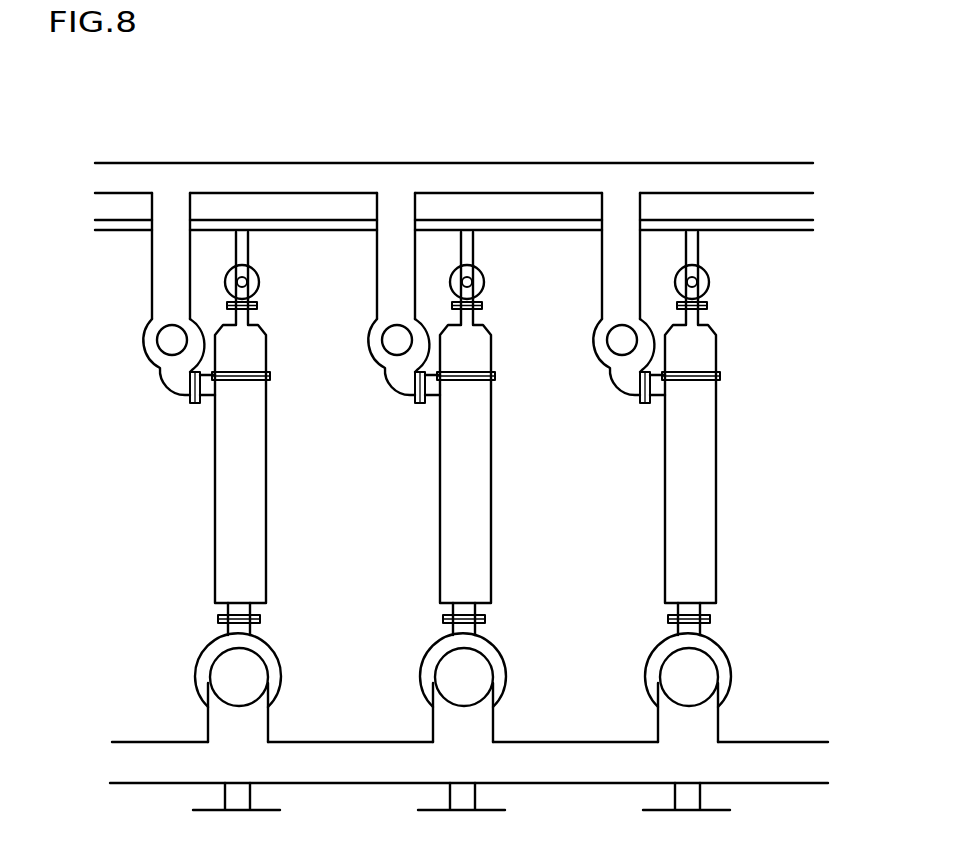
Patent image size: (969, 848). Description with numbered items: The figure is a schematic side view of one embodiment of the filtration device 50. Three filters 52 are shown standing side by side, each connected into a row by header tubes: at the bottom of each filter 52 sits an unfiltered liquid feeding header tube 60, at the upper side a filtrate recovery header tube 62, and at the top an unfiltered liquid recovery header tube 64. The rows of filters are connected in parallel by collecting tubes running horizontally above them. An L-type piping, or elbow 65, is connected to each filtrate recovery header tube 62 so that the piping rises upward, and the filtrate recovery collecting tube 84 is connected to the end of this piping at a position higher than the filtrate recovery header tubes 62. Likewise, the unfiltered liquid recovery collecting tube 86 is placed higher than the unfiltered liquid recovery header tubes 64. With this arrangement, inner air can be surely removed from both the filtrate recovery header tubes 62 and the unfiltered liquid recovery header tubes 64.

The filtration device 50 is at (757, 97).
The filter 52 is at (266, 481).
The unfiltered liquid feeding header tube 60 is at (258, 670).
The filtrate recovery header tube 62 is at (165, 342).
The unfiltered liquid recovery header tube 64 is at (247, 283).
The L-type piping (elbow) 65 is at (152, 249).
The filtrate recovery collecting tube 84 is at (513, 172).
The unfiltered liquid recovery collecting tube 86 is at (777, 227).